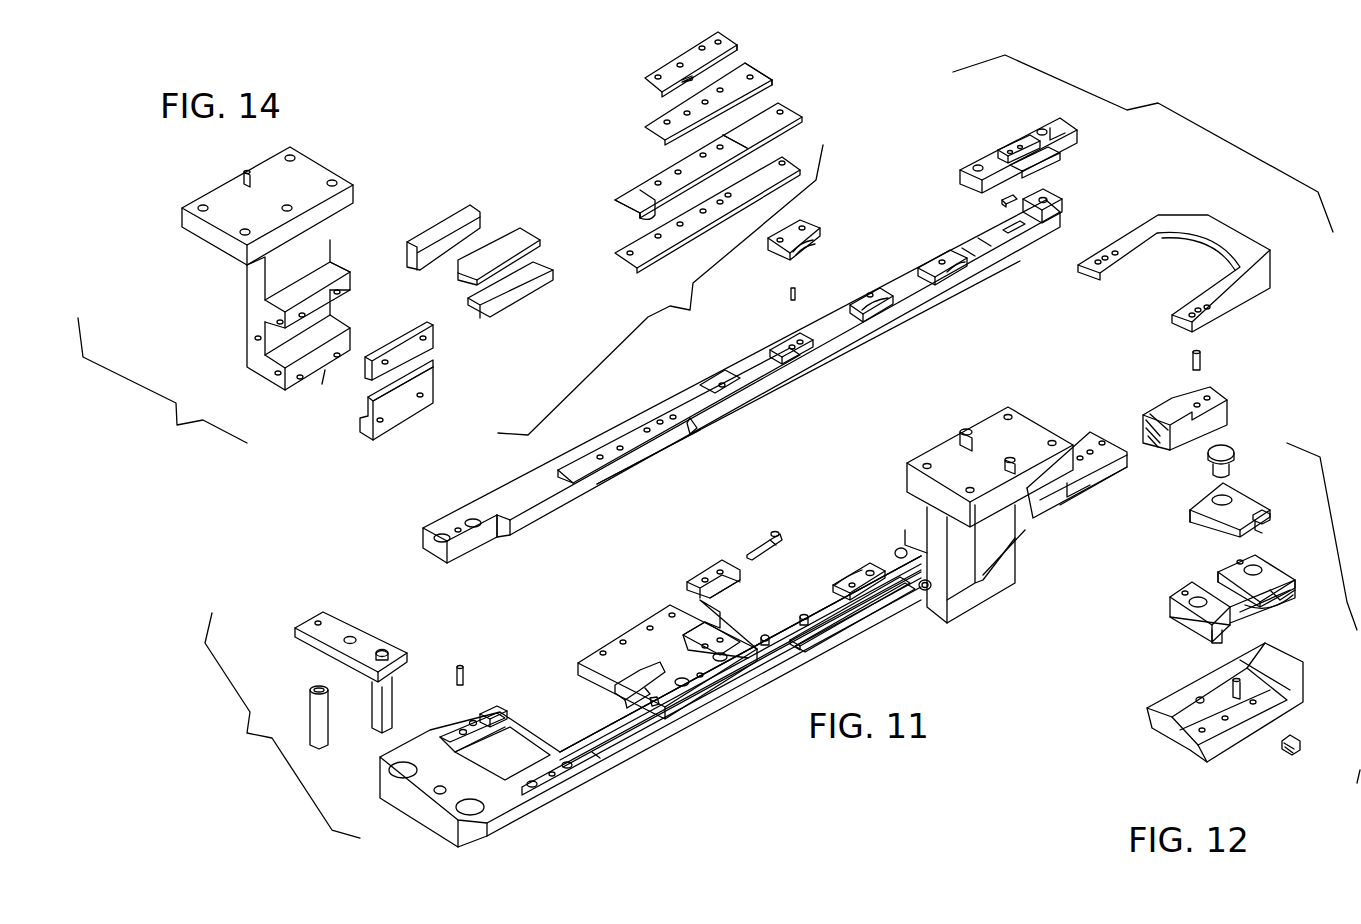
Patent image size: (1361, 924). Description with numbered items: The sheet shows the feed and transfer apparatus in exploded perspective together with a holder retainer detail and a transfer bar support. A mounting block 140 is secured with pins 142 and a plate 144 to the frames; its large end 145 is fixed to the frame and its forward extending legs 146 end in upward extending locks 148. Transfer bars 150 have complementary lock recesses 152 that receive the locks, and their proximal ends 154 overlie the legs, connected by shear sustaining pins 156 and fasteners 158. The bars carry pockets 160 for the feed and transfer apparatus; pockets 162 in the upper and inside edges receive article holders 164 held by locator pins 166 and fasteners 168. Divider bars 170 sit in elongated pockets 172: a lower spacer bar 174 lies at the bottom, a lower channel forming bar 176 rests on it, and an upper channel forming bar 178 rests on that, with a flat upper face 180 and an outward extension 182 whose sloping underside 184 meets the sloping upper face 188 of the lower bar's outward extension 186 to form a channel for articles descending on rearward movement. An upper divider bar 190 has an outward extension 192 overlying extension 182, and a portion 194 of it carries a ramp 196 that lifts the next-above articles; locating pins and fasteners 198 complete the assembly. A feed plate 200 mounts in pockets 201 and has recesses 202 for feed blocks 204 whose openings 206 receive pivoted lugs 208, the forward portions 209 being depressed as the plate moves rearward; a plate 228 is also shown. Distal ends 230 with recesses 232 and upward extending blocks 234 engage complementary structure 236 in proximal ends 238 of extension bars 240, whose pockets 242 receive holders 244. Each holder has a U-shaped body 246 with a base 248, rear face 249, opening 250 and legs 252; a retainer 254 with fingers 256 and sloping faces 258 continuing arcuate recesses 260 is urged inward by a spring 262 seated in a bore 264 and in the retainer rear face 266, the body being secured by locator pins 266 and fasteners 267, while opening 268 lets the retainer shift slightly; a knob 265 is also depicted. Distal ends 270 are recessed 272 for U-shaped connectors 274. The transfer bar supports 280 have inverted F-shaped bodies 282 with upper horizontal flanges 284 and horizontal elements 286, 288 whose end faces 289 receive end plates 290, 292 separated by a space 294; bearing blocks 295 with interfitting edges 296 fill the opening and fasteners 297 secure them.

In FIG. 11, the mounting block 140 is at (520, 830).
In FIG. 11, the pins 142 is at (315, 728).
In FIG. 11, the plate 144 is at (298, 637).
In FIG. 11, the large end 145 is at (430, 745).
In FIG. 11, the forward extending legs 146 is at (462, 732).
In FIG. 11, the upward extending locks 148 is at (508, 712).
In FIG. 11, the transfer bars 150 is at (696, 728).
In FIG. 14, the lock recesses 152 is at (500, 535).
In FIG. 14, the proximal ends 154 is at (460, 500).
In FIG. 11, the shear sustaining pins 156 is at (465, 683).
In FIG. 11, the fasteners 158 is at (585, 737).
In FIG. 14, the pockets 160 is at (790, 360).
In FIG. 14, the pockets 162 is at (798, 348).
In FIG. 14, the article holders 164 is at (788, 225).
In FIG. 14, the locator pins 166 is at (788, 295).
In FIG. 14, the fasteners 168 is at (872, 290).
In FIG. 14, the divider bars 170 is at (741, 386).
In FIG. 11, the divider bars 170 is at (790, 596).
In FIG. 14, the pockets 172 is at (678, 408).
In FIG. 14, the lower spacer bar 174 is at (628, 268).
In FIG. 14, the lower channel forming bar 176 is at (632, 218).
In FIG. 11, the lower channel forming bar 176 is at (830, 600).
In FIG. 14, the upper channel forming bar 178 is at (660, 132).
In FIG. 14, the flat upper face 180 is at (760, 75).
In FIG. 14, the outward extension 182 is at (775, 86).
In FIG. 14, the sloping underside 184 is at (712, 130).
In FIG. 14, the outward extension 186 is at (632, 195).
In FIG. 14, the upper face 188 is at (678, 185).
In FIG. 14, the upper divider bar 190 is at (658, 85).
In FIG. 11, the upper divider bar 190 is at (815, 640).
In FIG. 14, the outward extension 192 is at (738, 46).
In FIG. 14, the portion 194 is at (680, 85).
In FIG. 14, the ramp 196 is at (688, 76).
In FIG. 11, the locating pins and fasteners 198 is at (766, 632).
In FIG. 11, the feed plate 200 is at (580, 668).
In FIG. 14, the pockets 201 is at (645, 455).
In FIG. 11, the recesses 202 is at (712, 635).
In FIG. 11, the feed blocks 204 is at (695, 592).
In FIG. 11, the openings 206 is at (738, 578).
In FIG. 11, the pivoted lugs 208 is at (757, 548).
In FIG. 11, the forward portions 209 is at (782, 534).
In FIG. 11, the plate 228 is at (855, 580).
In FIG. 14, the distal ends 230 is at (1025, 245).
In FIG. 11, the distal ends 230 is at (1100, 480).
In FIG. 14, the recesses 232 is at (1030, 232).
In FIG. 14, the upward extending blocks 234 is at (1058, 202).
In FIG. 14, the complementary structure 236 is at (1045, 173).
In FIG. 14, the proximal ends 238 is at (972, 162).
In FIG. 14, the extension bars 240 is at (1075, 145).
In FIG. 12, the extension bars 240 is at (1190, 755).
In FIG. 14, the pockets 242 is at (998, 200).
In FIG. 12, the pockets 242 is at (1222, 742).
In FIG. 14, the holders 244 is at (1030, 135).
In FIG. 12, the holders 244 is at (1185, 589).
In FIG. 12, the U-shaped bodies 246 is at (1175, 620).
In FIG. 12, the base 248 is at (1275, 612).
In FIG. 12, the rear face 249 is at (1288, 600).
In FIG. 12, the opening 250 is at (1215, 585).
In FIG. 12, the legs 252 is at (1265, 572).
In FIG. 12, the retainer 254 is at (1213, 507).
In FIG. 12, the fingers 256 is at (1268, 516).
In FIG. 12, the sloping faces 258 is at (1260, 528).
In FIG. 12, the arcuate recesses 260 is at (1282, 588).
In FIG. 12, the spring 262 is at (1294, 740).
In FIG. 12, the bore 264 is at (1200, 695).
In FIG. 12, the knob 265 is at (1232, 462).
In FIG. 12, the locator pins 266 is at (1190, 512).
In FIG. 14, the fasteners 267 is at (978, 160).
In FIG. 12, the fasteners 267 is at (1250, 565).
In FIG. 12, the opening 268 is at (1232, 499).
In FIG. 12, the distal ends 270 is at (1205, 427).
In FIG. 12, the recesses 272 is at (1215, 412).
In FIG. 12, the U-shaped connectors 274 is at (1258, 210).
In FIG. 14, the transfer bar supports 280 is at (233, 283).
In FIG. 11, the transfer bar supports 280 is at (968, 532).
In FIG. 14, the inverted F-shaped bodies 282 is at (262, 282).
In FIG. 11, the inverted F-shaped bodies 282 is at (977, 640).
In FIG. 14, the upper horizontal flanges 284 is at (215, 238).
In FIG. 11, the upper horizontal flanges 284 is at (922, 487).
In FIG. 14, the horizontal element 286 is at (268, 372).
In FIG. 14, the horizontal element 288 is at (272, 310).
In FIG. 14, the end faces 289 is at (322, 362).
In FIG. 14, the end plate 290 is at (400, 348).
In FIG. 14, the end plate 292 is at (405, 410).
In FIG. 14, the space 294 is at (418, 380).
In FIG. 14, the bearing blocks 295 is at (500, 240).
In FIG. 14, the interfitting edges 296 is at (470, 225).
In FIG. 11, the fasteners 297 is at (920, 600).